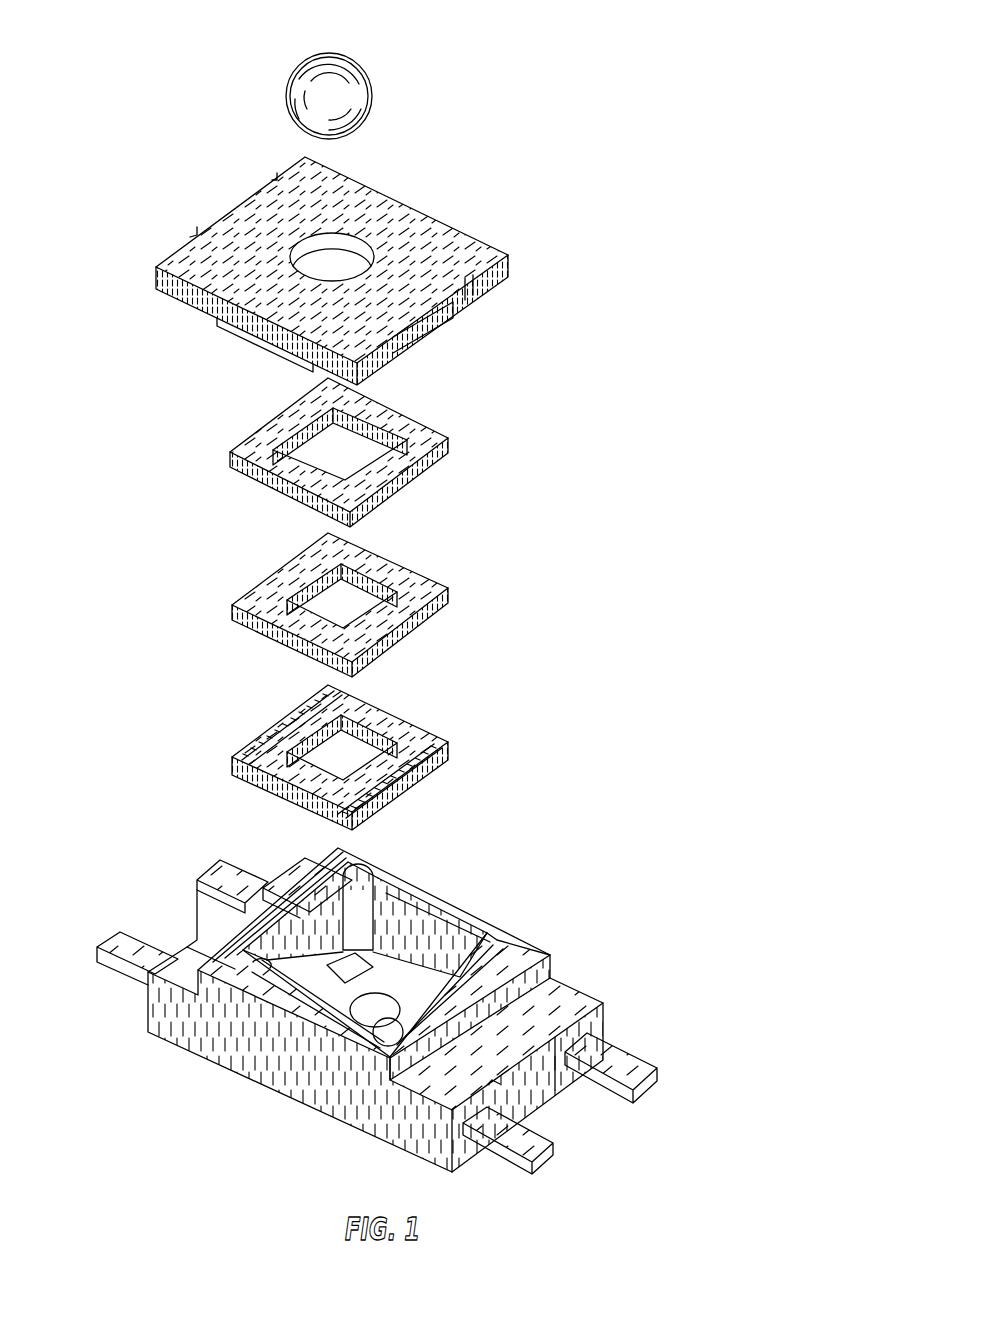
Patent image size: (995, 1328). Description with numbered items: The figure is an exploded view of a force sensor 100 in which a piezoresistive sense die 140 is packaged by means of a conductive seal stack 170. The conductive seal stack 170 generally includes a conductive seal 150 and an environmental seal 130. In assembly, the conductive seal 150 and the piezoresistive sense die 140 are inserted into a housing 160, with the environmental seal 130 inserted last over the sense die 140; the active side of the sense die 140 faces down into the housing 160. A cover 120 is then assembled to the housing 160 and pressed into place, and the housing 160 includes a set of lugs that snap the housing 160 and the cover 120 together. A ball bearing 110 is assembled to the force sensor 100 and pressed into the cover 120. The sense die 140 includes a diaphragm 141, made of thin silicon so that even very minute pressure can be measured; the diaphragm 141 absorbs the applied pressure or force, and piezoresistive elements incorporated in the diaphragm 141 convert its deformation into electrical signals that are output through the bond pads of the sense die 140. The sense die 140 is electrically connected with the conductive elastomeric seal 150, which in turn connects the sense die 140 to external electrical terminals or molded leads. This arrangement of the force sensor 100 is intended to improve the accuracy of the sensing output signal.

The force sensor 100 is at (682, 68).
The ball bearing 110 is at (291, 84).
The cover 120 is at (183, 257).
The environmental seal 130 is at (250, 450).
The piezoresistive sense die 140 is at (415, 583).
The diaphragm 141 is at (315, 582).
The conductive seal 150 is at (400, 730).
The housing 160 is at (523, 947).
The conductive seal stack 170 is at (447, 513).